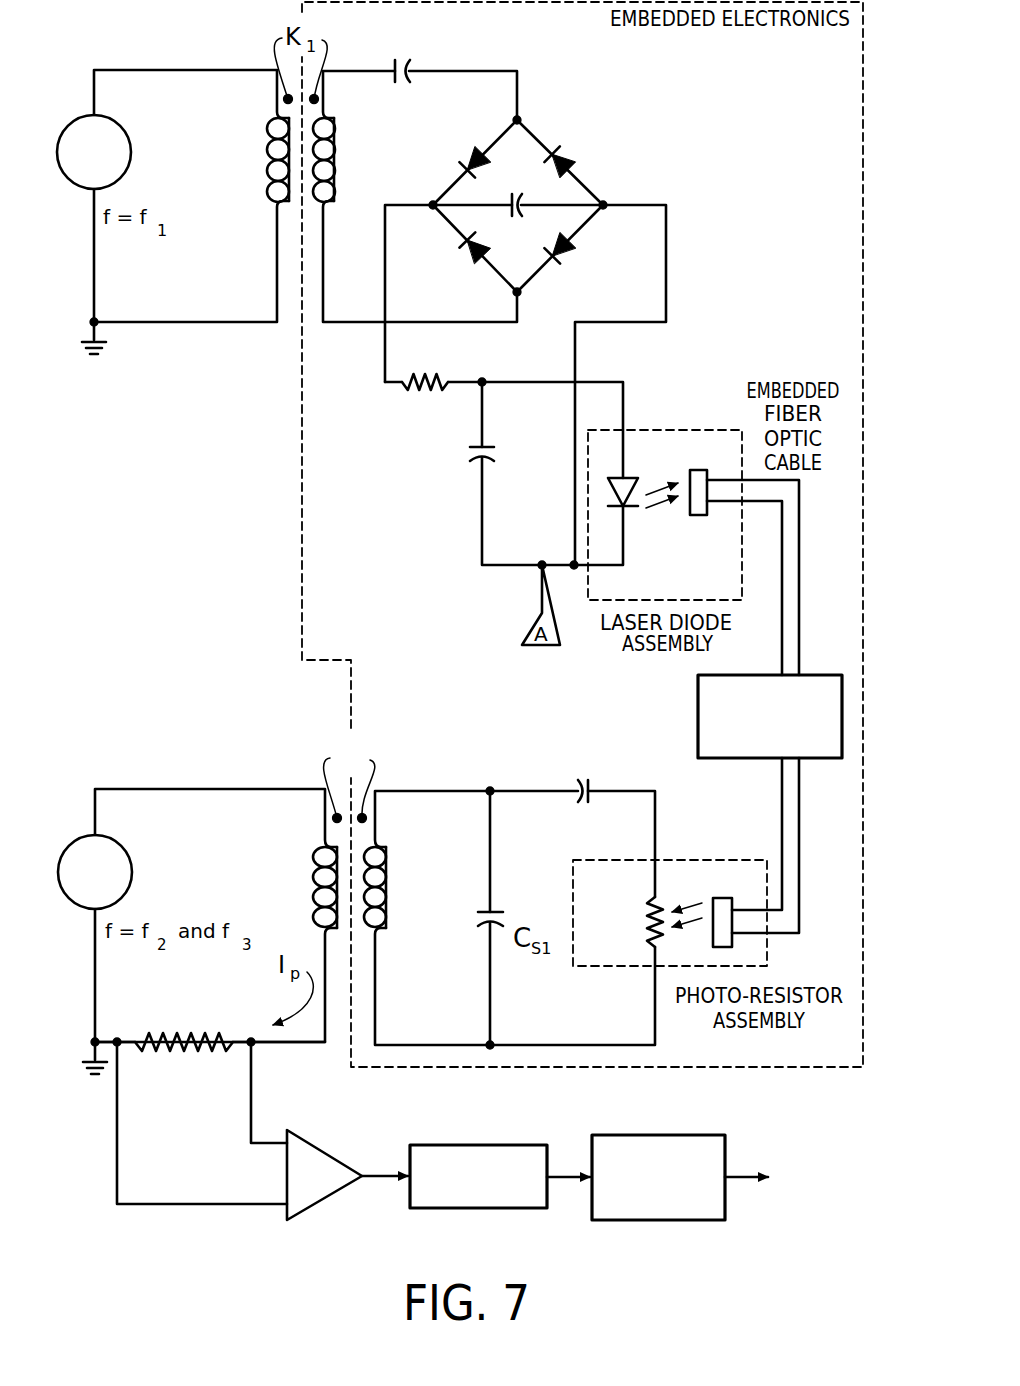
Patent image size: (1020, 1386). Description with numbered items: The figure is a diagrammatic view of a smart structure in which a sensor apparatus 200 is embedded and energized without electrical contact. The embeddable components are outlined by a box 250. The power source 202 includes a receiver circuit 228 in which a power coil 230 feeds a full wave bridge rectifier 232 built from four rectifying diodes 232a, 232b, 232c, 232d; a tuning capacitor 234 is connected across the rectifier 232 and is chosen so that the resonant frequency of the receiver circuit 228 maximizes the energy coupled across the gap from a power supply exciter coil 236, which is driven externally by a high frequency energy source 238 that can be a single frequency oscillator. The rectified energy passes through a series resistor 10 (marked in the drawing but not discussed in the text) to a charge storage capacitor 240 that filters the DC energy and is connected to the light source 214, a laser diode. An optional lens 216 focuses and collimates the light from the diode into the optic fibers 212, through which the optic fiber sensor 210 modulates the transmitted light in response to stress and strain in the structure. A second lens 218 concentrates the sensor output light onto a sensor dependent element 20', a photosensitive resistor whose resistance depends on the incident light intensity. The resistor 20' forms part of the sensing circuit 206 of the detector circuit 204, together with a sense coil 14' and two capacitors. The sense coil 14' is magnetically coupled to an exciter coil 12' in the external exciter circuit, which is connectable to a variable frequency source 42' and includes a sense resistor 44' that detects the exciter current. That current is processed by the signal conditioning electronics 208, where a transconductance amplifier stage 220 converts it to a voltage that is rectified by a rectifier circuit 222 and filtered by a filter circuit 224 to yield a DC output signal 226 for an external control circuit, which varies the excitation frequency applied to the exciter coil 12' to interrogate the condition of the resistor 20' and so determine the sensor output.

The high frequency energy source 238 is at (120, 122).
The power supply exciter coil 236 is at (269, 194).
The power coil 230 is at (333, 130).
The receiver circuit 228 is at (450, 60).
The tuning capacitor 234 is at (528, 202).
The full wave bridge rectifier 232 is at (568, 114).
The rectifying diode 232a is at (481, 151).
The rectifying diode 232b is at (573, 167).
The rectifying diode 232c is at (571, 247).
The rectifying diode 232d is at (464, 250).
The box outlining embeddable components 250 is at (863, 72).
The sensor apparatus 200 is at (818, 355).
The resistor R2 10 is at (433, 388).
The charge storage capacitor 240 is at (490, 442).
The power source 202 is at (400, 497).
The light source 214 is at (625, 478).
The lens 216 is at (700, 517).
The optic fibers 212 is at (800, 610).
The optic fiber sensor 210 is at (748, 760).
The detector circuit 204 is at (288, 743).
The sensing circuit 206 is at (637, 753).
The variable frequency source 42' is at (126, 867).
The exciter coil 12' is at (300, 873).
The sense coil 14' is at (408, 874).
The sensor dependent element 20' is at (625, 886).
The sense resistor 44' is at (210, 1042).
The second lens 218 is at (723, 948).
The transconductance amplifier stage 220 is at (318, 1148).
The rectifier circuit 222 is at (462, 1143).
The filter circuit 224 is at (640, 1135).
The DC output signal 226 is at (842, 1152).
The signal conditioning electronics 208 is at (255, 1233).